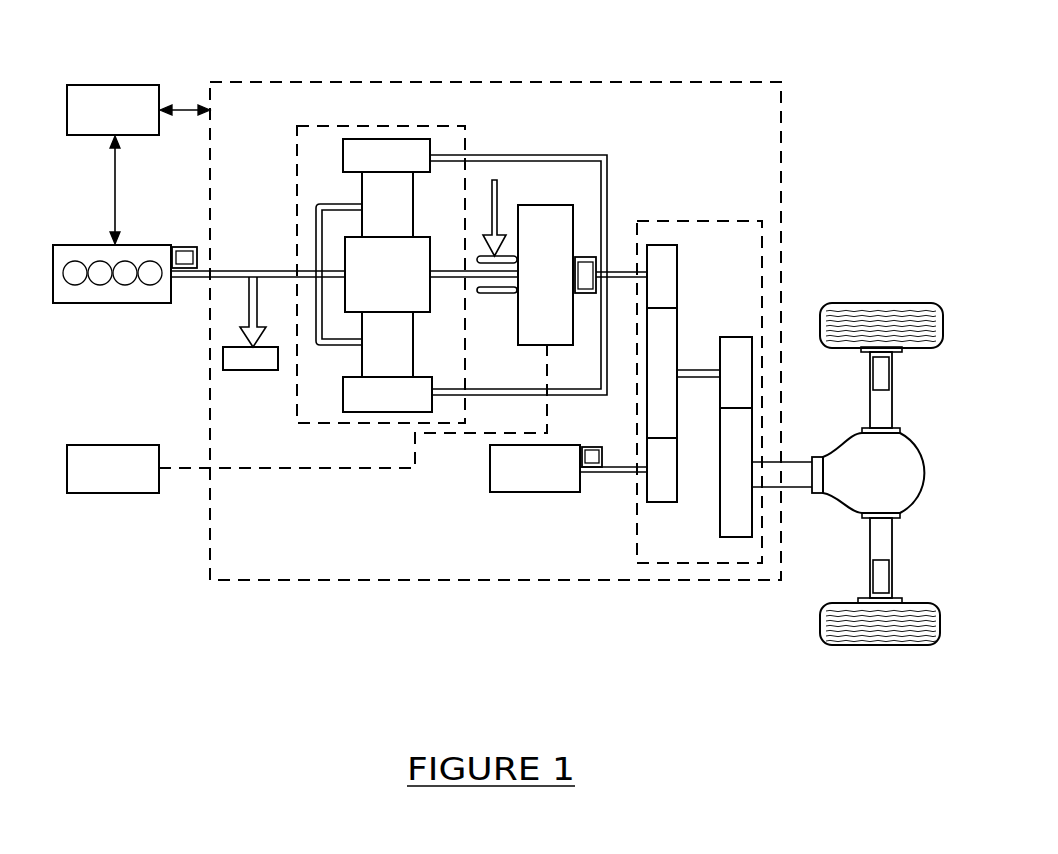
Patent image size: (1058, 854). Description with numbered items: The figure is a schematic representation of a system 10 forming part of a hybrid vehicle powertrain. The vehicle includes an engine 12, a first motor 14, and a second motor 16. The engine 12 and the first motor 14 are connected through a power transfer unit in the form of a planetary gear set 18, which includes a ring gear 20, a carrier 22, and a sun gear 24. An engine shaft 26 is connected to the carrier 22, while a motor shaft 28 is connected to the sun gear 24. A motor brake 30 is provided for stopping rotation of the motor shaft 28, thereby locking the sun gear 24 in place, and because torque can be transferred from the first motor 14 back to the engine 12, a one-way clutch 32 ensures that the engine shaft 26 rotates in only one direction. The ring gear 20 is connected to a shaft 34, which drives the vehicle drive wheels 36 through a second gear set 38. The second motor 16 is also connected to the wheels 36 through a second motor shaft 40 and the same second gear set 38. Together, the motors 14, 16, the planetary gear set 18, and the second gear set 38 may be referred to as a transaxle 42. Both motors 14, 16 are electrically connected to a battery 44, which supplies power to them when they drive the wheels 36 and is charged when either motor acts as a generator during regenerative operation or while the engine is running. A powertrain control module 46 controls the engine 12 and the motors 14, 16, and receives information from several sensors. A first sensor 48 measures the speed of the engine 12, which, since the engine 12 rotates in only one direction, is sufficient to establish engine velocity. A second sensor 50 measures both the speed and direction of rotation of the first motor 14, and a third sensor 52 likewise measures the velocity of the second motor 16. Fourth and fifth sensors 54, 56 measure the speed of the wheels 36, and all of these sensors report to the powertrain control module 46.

The system 10 is at (718, 692).
The engine 12 is at (92, 244).
The first motor 14 is at (585, 256).
The second motor 16 is at (500, 493).
The planetary gear set 18 is at (311, 112).
The ring gear 20 is at (393, 139).
The carrier 22 is at (413, 206).
The sun gear 24 is at (345, 250).
The engine shaft 26 is at (197, 278).
The motor shaft 28 is at (453, 271).
The motor brake 30 is at (555, 205).
The one-way clutch 32 is at (223, 357).
The shaft 34 is at (623, 268).
The second gear set 38 is at (772, 240).
The vehicle drive wheels 36 is at (882, 292).
The second motor shaft 40 is at (625, 476).
The transaxle 42 is at (788, 122).
The battery 44 is at (115, 494).
The powertrain control module 46 is at (115, 84).
The first sensor 48 is at (185, 246).
The second sensor 50 is at (610, 156).
The third sensor 52 is at (603, 456).
The fourth sensor 54 is at (872, 372).
The fifth sensor 56 is at (872, 578).